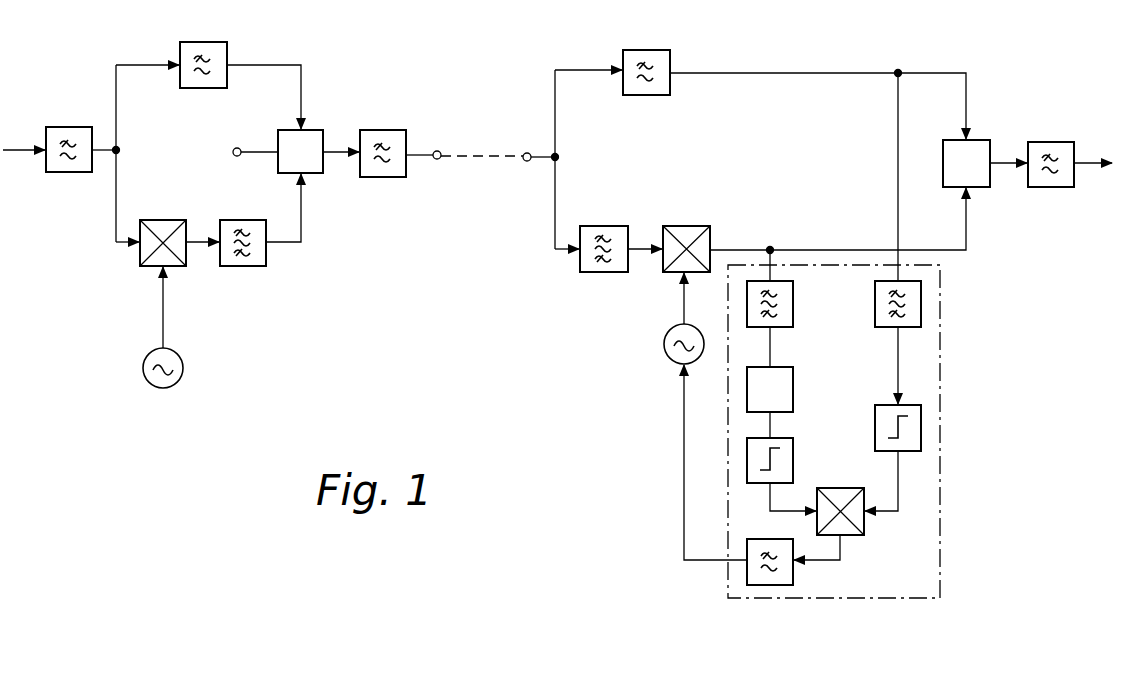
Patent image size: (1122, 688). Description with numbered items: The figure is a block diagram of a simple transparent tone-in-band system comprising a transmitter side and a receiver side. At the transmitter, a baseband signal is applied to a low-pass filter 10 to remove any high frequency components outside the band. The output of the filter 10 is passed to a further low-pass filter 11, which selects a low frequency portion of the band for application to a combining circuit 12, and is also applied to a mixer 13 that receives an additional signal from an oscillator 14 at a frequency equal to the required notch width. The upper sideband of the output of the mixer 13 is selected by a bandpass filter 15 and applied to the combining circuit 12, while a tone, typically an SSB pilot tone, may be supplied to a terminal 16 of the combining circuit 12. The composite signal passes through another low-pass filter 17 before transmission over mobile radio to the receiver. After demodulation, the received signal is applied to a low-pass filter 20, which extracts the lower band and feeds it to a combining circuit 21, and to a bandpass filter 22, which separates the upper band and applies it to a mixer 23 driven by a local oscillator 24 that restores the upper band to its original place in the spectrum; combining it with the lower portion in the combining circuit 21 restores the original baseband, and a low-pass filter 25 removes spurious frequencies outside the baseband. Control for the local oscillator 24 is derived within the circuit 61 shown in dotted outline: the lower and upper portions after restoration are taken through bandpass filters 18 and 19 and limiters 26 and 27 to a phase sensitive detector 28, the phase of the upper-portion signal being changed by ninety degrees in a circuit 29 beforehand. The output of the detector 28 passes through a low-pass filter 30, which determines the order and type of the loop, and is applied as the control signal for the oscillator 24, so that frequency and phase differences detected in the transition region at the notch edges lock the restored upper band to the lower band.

The low-pass filter 10 is at (69, 128).
The further low-pass filter 11 is at (210, 42).
The combining circuit 12 is at (274, 130).
The mixer 13 is at (163, 220).
The oscillator 14 is at (144, 360).
The bandpass filter 15 is at (246, 220).
The terminal 16 is at (236, 147).
The low-pass filter 17 is at (373, 130).
The bandpass filter 18 is at (921, 301).
The bandpass filter 19 is at (793, 303).
The low-pass filter 20 is at (652, 50).
The combining circuit 21 is at (976, 140).
The bandpass filter 22 is at (616, 204).
The mixer 23 is at (690, 226).
The local oscillator 24 is at (666, 342).
The low-pass filter 25 is at (1046, 142).
The limiter 26 is at (875, 418).
The limiter 27 is at (793, 461).
The phase sensitive detector 28 is at (864, 526).
The 90° phase shift circuit 29 is at (793, 390).
The low-pass filter 30 is at (793, 574).
The oscillator control circuit 61 is at (940, 461).